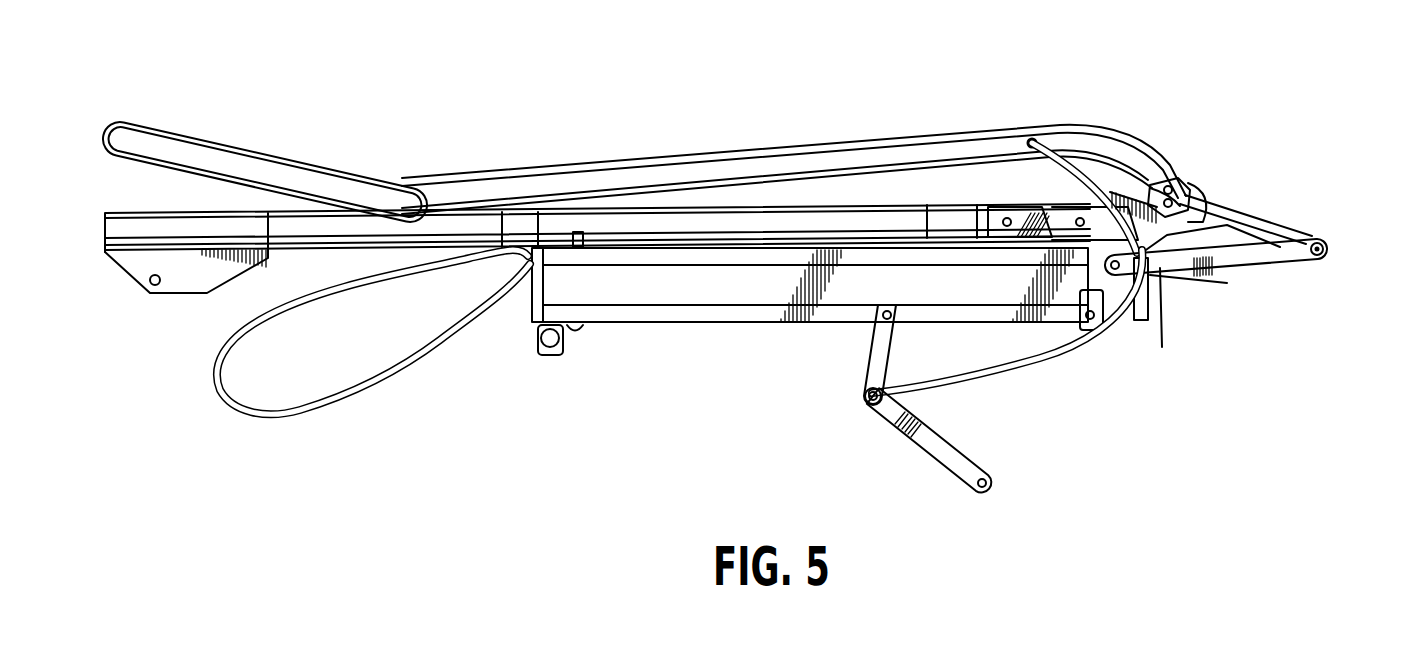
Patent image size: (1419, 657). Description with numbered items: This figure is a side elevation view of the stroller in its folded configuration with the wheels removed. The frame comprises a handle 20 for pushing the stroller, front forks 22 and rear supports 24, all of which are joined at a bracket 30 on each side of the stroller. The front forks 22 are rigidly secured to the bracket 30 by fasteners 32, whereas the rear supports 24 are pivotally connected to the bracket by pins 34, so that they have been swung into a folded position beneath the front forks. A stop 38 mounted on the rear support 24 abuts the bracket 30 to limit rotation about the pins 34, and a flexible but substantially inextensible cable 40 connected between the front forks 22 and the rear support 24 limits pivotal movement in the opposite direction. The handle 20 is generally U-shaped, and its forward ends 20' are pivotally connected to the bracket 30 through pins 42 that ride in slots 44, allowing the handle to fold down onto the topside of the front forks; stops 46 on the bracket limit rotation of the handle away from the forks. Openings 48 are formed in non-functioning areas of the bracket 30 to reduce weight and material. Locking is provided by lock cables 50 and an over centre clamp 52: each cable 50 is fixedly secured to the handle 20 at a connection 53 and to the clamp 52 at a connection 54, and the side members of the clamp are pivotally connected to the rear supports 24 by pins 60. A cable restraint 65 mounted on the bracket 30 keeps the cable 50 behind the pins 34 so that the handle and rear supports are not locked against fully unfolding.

The handle 20 is at (794, 139).
The forward ends 20' is at (1234, 127).
The front forks 22 is at (290, 222).
The rear supports 24 is at (727, 293).
The bracket 30 is at (1253, 224).
The fasteners 32 is at (1080, 218).
The pins 34 is at (1160, 278).
The stop 38 is at (1100, 345).
The cables 40 is at (457, 340).
The pins 42 is at (1174, 186).
The slots 44 is at (1259, 219).
The stops 46 is at (1333, 247).
The openings 48 is at (1123, 209).
The lock cables 50 is at (1073, 367).
The over centre clamp 52 is at (947, 426).
The connections 53 is at (1032, 140).
The connections 54 is at (865, 397).
The pins 60 is at (877, 330).
The cable restraint 65 is at (1170, 272).